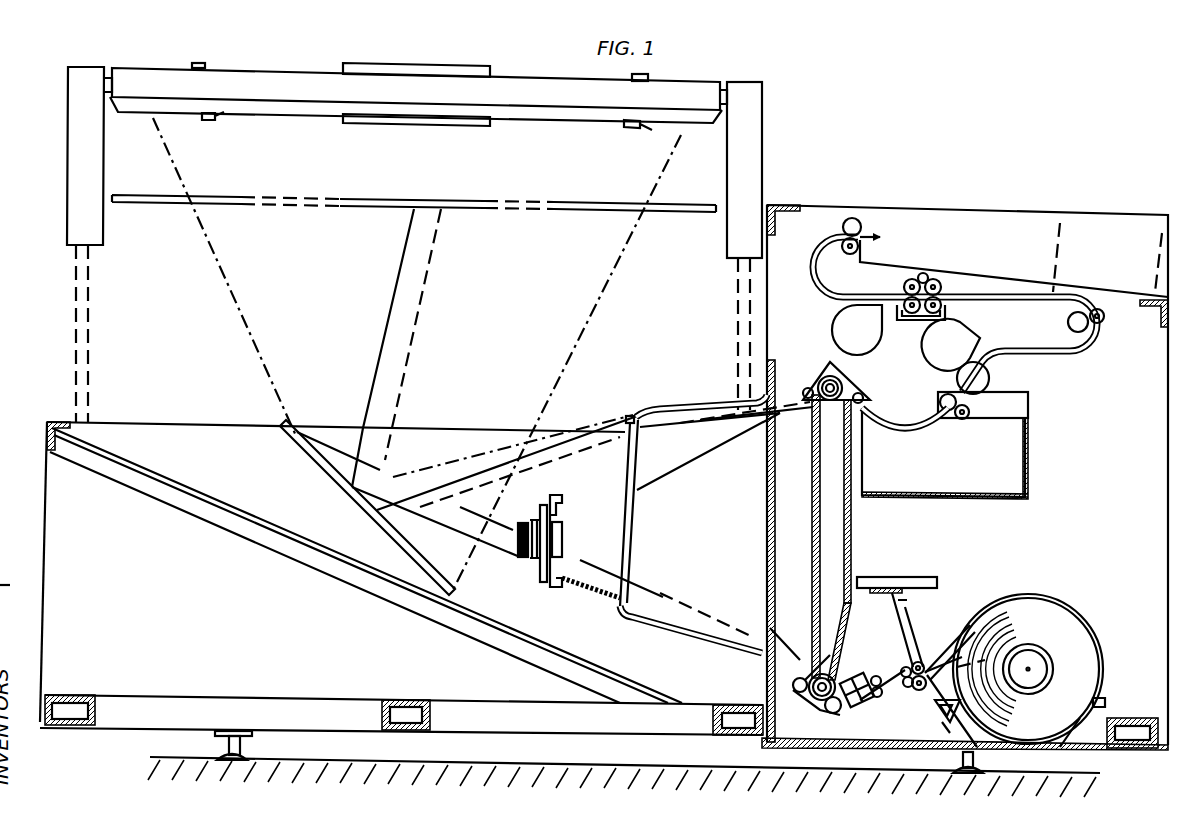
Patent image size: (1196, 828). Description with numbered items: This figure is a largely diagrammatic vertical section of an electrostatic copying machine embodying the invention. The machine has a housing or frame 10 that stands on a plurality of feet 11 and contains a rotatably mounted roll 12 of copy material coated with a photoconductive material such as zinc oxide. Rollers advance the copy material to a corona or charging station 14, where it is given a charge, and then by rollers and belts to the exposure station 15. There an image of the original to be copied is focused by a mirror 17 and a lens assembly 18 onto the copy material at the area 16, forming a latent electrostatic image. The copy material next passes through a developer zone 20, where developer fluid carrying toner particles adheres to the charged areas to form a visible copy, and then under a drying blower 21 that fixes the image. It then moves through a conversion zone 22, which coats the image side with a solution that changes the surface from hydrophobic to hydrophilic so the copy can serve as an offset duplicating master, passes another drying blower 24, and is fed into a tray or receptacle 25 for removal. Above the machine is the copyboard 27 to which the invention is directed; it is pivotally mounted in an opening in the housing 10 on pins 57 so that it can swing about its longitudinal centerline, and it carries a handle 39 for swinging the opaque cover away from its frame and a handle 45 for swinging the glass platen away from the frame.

The housing or frame 10 is at (66, 60).
The feet 11 is at (227, 740).
The roll of copy material 12 is at (1090, 578).
The corona or charging station 14 is at (853, 705).
The exposure station 15 is at (607, 410).
The exposure area 16 is at (813, 543).
The mirror 17 is at (398, 534).
The lens assembly 18 is at (519, 564).
The developer zone 20 is at (910, 398).
The drying blower 21 is at (955, 342).
The conversion zone 22 is at (934, 276).
The drying blower 24 is at (852, 330).
The tray or receptacle 25 is at (999, 272).
The copyboard 27 is at (281, 66).
The handle 39 is at (409, 65).
The handle 45 is at (446, 125).
The pin 57 is at (108, 86).